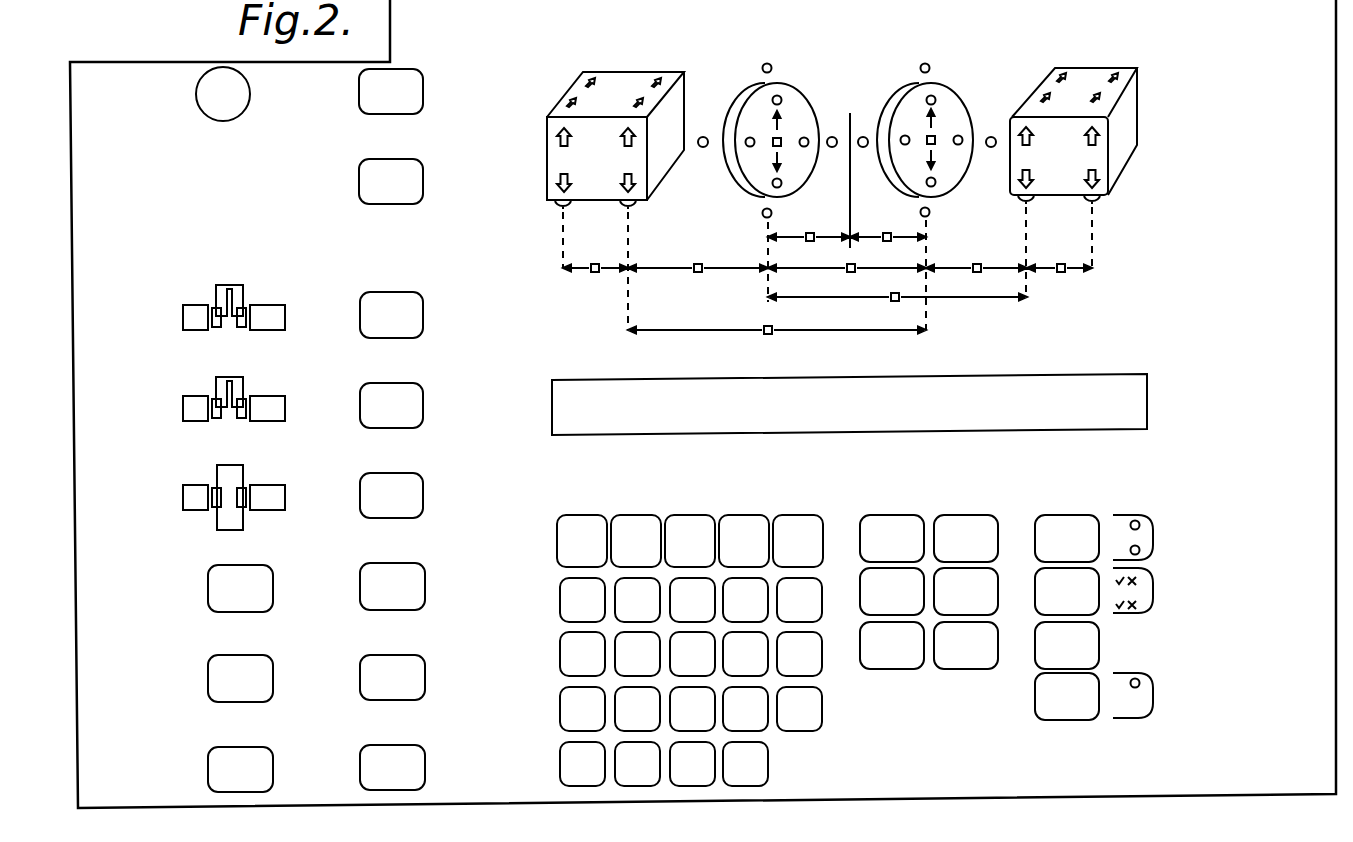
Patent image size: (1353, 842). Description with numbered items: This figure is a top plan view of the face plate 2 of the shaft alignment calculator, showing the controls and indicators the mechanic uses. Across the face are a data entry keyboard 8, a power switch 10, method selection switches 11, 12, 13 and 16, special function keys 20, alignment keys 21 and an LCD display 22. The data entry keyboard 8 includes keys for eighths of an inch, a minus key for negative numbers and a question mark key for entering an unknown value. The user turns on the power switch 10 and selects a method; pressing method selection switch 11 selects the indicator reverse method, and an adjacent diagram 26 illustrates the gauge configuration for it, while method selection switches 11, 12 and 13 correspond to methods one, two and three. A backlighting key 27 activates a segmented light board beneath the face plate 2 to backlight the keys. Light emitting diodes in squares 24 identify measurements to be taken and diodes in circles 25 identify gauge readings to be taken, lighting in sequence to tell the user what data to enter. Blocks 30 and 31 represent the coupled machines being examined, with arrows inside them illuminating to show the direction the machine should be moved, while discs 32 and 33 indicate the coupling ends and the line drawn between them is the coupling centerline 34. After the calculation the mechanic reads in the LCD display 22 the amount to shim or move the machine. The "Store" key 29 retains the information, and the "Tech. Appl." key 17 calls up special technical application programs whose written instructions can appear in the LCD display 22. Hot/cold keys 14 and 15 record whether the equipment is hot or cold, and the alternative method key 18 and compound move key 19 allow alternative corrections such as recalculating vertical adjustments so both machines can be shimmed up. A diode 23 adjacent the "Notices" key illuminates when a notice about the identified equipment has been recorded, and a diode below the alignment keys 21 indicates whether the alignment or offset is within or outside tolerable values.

The face plate 2 is at (1243, 222).
The data entry keyboard 8 is at (703, 504).
The power switch 10 is at (213, 113).
The method selection switch 11 is at (420, 302).
The method selection switch 12 is at (413, 385).
The method selection switch 13 is at (423, 497).
The hot/cold key 14 is at (208, 586).
The hot/cold key 15 is at (412, 564).
The method selection switch 16 is at (208, 665).
The "Tech. Appl." key 17 is at (425, 675).
The alternative method key 18 is at (208, 770).
The compound move key 19 is at (413, 748).
The special function keys 20 is at (937, 680).
The alignment keys 21 is at (1081, 736).
The LCD display 22 is at (1107, 396).
The diode 23 is at (1138, 683).
The squares 24 is at (1062, 274).
The circles 25 is at (796, 113).
The diagram 26 is at (185, 312).
The backlighting key 27 is at (361, 170).
The "Store" key 29 is at (412, 70).
The block 30 is at (615, 80).
The block 31 is at (1090, 77).
The disc 32 is at (792, 108).
The disc 33 is at (940, 93).
The coupling centerline 34 is at (849, 130).